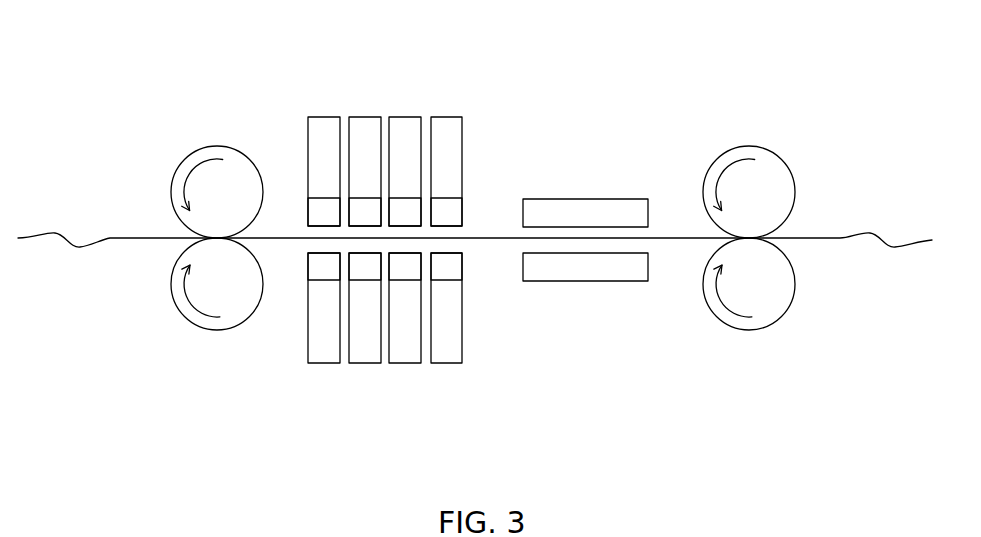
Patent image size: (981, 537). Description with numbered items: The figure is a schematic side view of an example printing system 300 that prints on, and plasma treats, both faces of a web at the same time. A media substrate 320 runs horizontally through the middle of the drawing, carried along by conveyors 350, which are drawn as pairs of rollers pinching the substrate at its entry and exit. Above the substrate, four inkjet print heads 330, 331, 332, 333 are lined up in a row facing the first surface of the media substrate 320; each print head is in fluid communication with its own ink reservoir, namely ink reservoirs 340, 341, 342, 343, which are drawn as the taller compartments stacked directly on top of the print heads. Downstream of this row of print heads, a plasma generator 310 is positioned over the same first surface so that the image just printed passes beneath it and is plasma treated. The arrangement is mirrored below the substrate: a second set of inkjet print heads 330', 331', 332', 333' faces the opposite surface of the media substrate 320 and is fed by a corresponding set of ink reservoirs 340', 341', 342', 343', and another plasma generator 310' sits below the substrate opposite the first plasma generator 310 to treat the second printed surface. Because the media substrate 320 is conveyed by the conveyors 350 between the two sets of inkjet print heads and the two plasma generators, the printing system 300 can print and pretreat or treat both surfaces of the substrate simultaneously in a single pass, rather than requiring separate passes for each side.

The printing system 300 is at (189, 44).
The plasma generator 310 is at (585, 172).
The plasma generator 310' is at (585, 308).
The media substrate 320 is at (120, 238).
The inkjet print head 330 is at (281, 175).
The inkjet print head 330' is at (282, 319).
The inkjet print head 331 is at (302, 152).
The inkjet print head 331' is at (306, 346).
The inkjet print head 332 is at (452, 168).
The inkjet print head 332' is at (455, 314).
The inkjet print head 333 is at (478, 182).
The inkjet print head 333' is at (481, 297).
The ink reservoir 340 is at (324, 123).
The ink reservoir 340' is at (327, 355).
The ink reservoir 341 is at (375, 113).
The ink reservoir 341' is at (376, 373).
The ink reservoir 342 is at (422, 125).
The ink reservoir 342' is at (425, 354).
The ink reservoir 343 is at (468, 137).
The ink reservoir 343' is at (471, 343).
The conveyor 350 is at (233, 305).